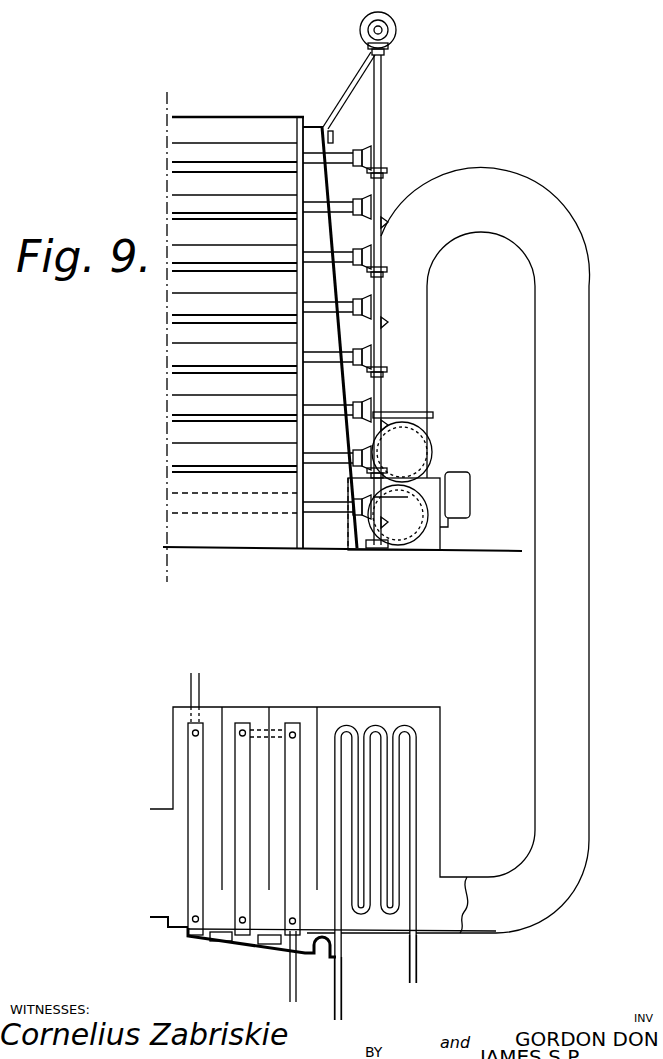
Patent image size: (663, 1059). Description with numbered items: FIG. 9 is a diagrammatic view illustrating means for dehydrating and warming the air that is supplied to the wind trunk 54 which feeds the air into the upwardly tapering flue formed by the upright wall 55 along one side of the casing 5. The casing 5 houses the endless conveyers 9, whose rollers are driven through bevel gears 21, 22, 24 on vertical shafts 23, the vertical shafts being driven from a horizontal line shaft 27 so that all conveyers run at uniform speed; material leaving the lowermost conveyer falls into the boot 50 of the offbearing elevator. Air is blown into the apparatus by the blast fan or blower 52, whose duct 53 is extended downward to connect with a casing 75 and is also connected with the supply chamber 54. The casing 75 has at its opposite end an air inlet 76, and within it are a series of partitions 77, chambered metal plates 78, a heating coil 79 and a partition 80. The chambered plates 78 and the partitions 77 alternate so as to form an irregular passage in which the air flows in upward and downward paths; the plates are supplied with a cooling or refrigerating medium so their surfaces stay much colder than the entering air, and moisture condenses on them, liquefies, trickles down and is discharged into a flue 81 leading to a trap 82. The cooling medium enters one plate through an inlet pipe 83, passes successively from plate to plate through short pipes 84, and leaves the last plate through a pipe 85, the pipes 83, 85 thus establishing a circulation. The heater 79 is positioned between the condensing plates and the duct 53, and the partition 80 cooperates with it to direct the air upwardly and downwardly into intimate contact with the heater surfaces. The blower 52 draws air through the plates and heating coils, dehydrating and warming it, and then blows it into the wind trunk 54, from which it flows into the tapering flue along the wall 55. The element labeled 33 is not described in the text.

The casing 5 is at (241, 117).
The endless conveyer 9 is at (188, 134).
The bevel gear 21 is at (368, 152).
The bevel gear 22 is at (388, 171).
The vertical shaft 23 is at (382, 131).
The bevel gear 24 is at (372, 395).
The horizontal line shaft 27 is at (384, 30).
The inner tube 33 is at (438, 262).
The boot 50 is at (234, 519).
The blast fan or blower 52 is at (432, 455).
The duct 53 is at (560, 657).
The supply chamber or wind trunk 54 is at (450, 527).
The upright wall 55 is at (345, 336).
The casing 75 is at (372, 708).
The air inlet 76 is at (158, 906).
The partition 77 is at (226, 718).
The chambered metal plate 78 is at (188, 845).
The heating coil 79 is at (405, 711).
The partition 80 is at (376, 919).
The flue 81 is at (237, 936).
The trap 82 is at (333, 958).
The inlet pipe 83 is at (289, 992).
The short pipe 84 is at (283, 727).
The pipe 85 is at (200, 677).